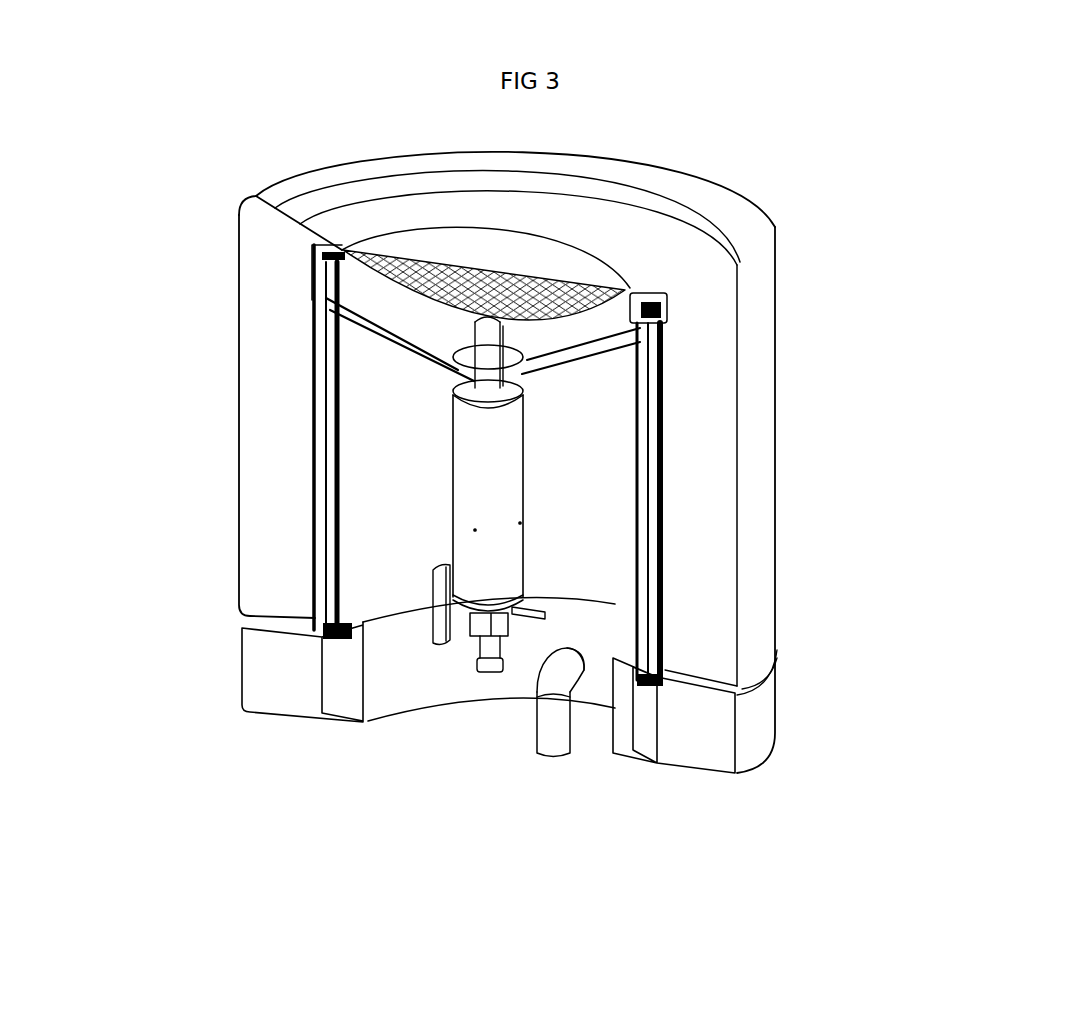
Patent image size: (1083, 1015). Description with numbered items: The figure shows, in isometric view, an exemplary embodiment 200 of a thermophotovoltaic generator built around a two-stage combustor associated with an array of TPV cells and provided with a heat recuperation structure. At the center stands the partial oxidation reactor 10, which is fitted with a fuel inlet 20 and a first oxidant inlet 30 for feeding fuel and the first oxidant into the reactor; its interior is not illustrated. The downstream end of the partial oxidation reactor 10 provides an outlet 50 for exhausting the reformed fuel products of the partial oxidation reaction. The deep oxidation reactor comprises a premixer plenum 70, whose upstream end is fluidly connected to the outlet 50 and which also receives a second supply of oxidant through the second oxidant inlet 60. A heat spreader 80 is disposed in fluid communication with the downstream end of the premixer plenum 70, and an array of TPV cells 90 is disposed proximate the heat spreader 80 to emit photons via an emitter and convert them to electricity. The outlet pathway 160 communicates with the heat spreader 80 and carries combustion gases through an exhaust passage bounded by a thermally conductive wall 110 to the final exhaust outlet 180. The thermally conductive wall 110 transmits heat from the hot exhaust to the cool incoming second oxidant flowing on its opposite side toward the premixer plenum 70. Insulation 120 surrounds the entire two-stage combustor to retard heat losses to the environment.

The thermophotovoltaic generator embodiment 200 is at (763, 97).
The insulation 120 is at (275, 388).
The thermally conductive wall 110 is at (327, 485).
The outlet pathway 160 is at (323, 258).
The array of TPV cells 90 is at (587, 248).
The heat spreader 80 is at (630, 296).
The premixer plenum 70 is at (588, 327).
The outlet 50 is at (497, 355).
The partial oxidation reactor 10 is at (530, 515).
The fuel inlet 20 is at (523, 623).
The first oxidant inlet 30 is at (442, 643).
The second oxidant inlet 60 is at (551, 757).
The final exhaust outlet 180 is at (310, 622).